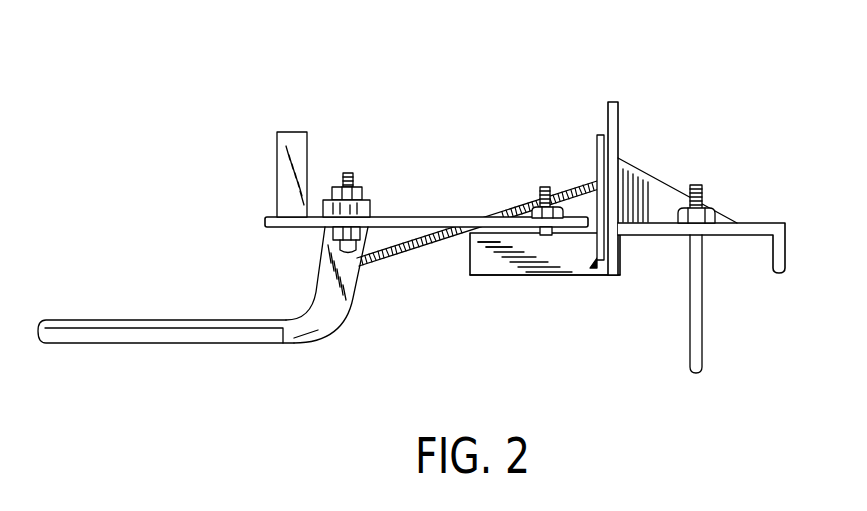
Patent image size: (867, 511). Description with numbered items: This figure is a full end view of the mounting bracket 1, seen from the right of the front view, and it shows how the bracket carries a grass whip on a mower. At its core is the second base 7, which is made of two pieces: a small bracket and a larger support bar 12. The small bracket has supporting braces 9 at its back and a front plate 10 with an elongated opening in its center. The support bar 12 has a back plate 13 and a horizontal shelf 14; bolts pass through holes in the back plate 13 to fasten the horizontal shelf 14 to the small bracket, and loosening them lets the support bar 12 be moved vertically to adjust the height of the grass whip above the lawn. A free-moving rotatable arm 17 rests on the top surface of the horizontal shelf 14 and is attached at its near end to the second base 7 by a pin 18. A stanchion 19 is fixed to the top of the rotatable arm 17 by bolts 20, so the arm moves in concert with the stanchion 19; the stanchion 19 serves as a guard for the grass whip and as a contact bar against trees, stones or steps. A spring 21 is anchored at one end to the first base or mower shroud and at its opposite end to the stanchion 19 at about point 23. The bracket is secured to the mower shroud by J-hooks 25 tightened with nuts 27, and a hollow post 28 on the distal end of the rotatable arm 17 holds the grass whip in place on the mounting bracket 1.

The mounting bracket 1 is at (699, 92).
The second base 7 is at (600, 256).
The supporting braces 9 is at (650, 186).
The front plate 10 is at (612, 101).
The support bar 12 is at (486, 290).
The back plate 13 is at (597, 134).
The horizontal shelf 14 is at (490, 245).
The rotatable arm 17 is at (405, 216).
The pin 18 is at (541, 185).
The stanchion 19 is at (92, 345).
The bolts 20 is at (348, 172).
The spring 21 is at (398, 252).
The point 23 is at (319, 263).
The J-hooks 25 is at (705, 325).
The nuts 27 is at (713, 213).
The hollow post 28 is at (284, 152).